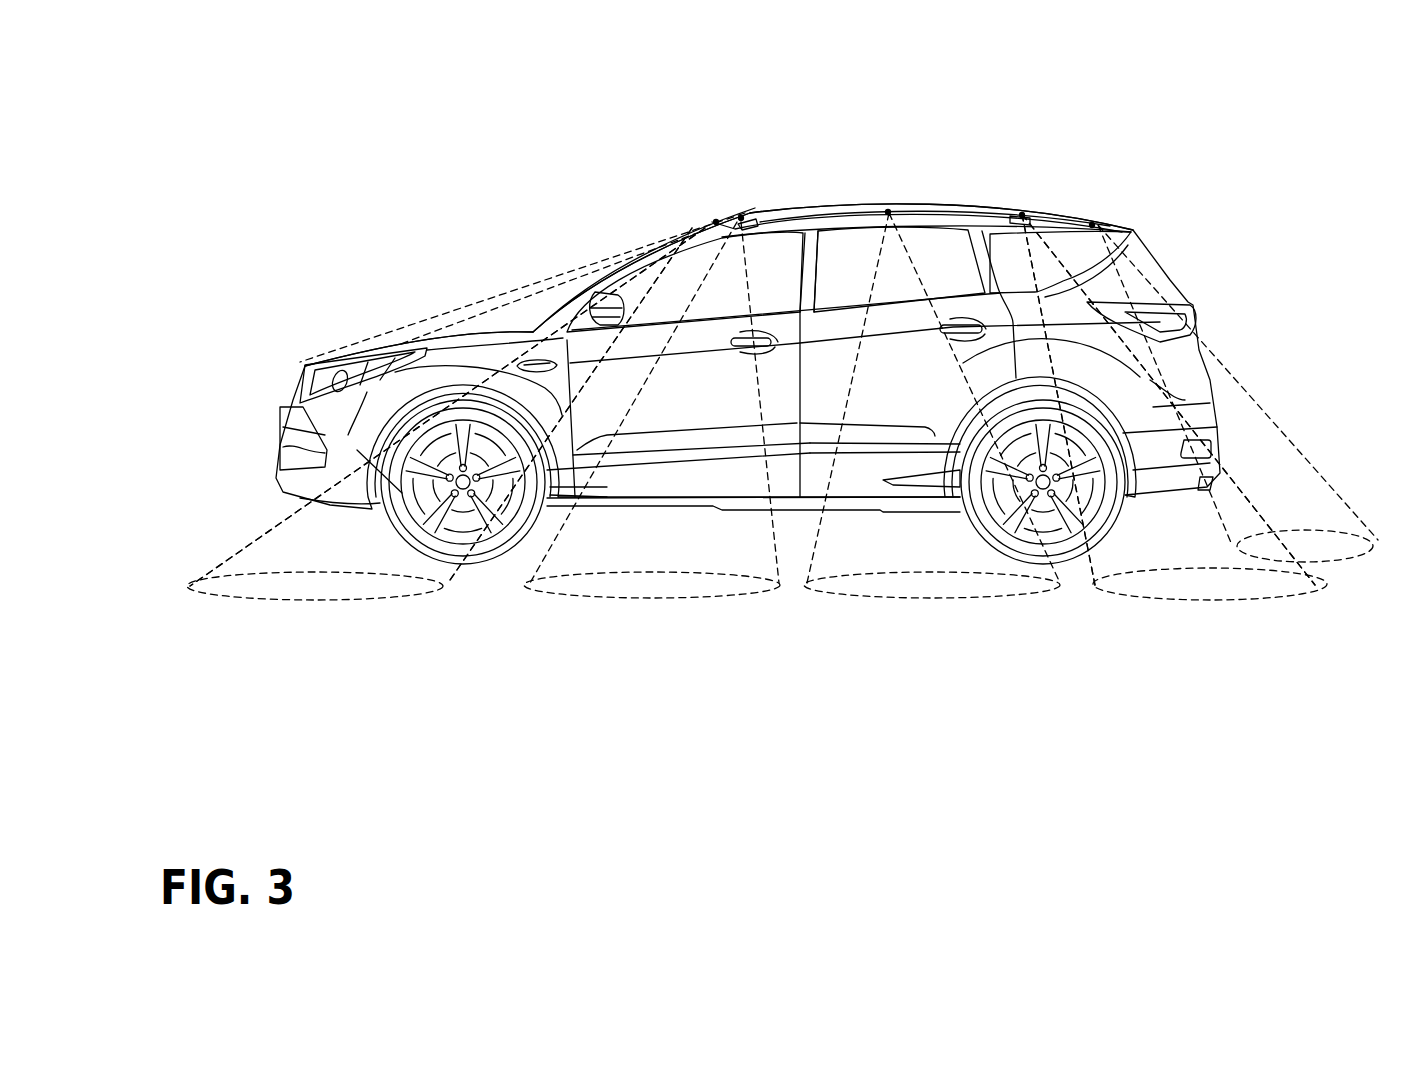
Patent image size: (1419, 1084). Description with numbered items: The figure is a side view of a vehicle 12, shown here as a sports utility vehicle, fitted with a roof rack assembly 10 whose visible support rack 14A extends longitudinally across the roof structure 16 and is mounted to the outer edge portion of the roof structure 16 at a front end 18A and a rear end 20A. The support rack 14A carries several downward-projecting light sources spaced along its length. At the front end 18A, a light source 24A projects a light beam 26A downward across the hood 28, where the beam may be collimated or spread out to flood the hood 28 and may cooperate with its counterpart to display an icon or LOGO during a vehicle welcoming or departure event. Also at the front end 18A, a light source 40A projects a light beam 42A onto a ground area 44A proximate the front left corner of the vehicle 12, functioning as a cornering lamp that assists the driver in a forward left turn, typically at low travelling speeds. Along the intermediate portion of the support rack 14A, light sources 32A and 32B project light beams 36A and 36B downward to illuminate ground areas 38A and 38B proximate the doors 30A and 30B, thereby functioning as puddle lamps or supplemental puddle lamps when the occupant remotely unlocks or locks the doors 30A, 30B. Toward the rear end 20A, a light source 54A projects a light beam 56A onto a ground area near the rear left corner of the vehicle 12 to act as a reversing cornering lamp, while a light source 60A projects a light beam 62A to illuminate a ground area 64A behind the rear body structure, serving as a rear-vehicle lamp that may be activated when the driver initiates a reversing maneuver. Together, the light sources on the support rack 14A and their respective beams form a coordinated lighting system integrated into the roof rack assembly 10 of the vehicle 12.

The roof rack assembly 10 is at (380, 212).
The vehicle 12 is at (250, 405).
The support rack 14A is at (950, 200).
The roof structure 16 is at (858, 210).
The front end 18A is at (728, 208).
The rear end 20A is at (1068, 218).
The light source 24A is at (690, 228).
The light beam 26A is at (455, 318).
The hood 28 is at (358, 350).
The door 30A is at (693, 407).
The door 30B is at (873, 400).
The light source 32A is at (741, 216).
The light source 32B is at (888, 210).
The light beam 36A is at (625, 598).
The light beam 36B is at (960, 598).
The ground area 38A is at (676, 600).
The ground area 38B is at (951, 600).
The light source 40A is at (713, 220).
The light beam 42A is at (350, 598).
The ground area 44A is at (311, 600).
The light source 54A is at (1024, 213).
The light beam 56A is at (1238, 600).
The light source 60A is at (1092, 224).
The light beam 62A is at (1357, 548).
The ground area 64A is at (1341, 560).